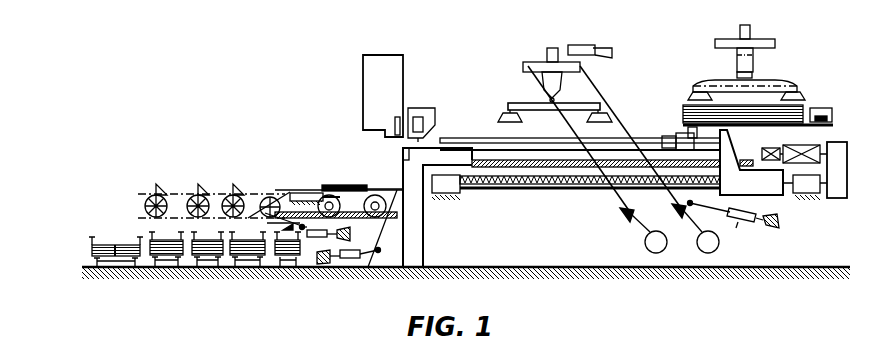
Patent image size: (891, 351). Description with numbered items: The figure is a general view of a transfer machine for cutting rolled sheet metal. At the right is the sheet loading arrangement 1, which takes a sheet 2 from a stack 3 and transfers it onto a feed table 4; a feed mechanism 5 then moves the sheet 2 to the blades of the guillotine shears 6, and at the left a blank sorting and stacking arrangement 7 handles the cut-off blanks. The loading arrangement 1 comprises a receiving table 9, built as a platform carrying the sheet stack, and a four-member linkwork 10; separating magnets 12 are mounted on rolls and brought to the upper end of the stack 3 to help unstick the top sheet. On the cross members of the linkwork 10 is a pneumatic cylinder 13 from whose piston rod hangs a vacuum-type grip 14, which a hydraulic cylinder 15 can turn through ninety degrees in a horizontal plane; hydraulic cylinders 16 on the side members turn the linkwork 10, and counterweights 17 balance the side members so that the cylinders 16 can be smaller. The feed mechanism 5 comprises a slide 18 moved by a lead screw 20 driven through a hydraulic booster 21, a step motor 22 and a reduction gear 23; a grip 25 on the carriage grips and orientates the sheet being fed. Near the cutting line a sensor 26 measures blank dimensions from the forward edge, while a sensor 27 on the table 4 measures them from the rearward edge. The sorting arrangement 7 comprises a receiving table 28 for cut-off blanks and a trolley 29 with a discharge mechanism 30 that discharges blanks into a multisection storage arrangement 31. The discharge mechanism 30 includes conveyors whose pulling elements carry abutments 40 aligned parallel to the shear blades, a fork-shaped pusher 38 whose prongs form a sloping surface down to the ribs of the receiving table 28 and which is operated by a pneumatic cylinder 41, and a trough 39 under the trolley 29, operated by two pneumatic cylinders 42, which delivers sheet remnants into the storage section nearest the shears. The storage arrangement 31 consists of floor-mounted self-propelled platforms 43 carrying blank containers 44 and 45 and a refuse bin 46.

The sheet loading arrangement 1 is at (715, 76).
The sheet 2 is at (525, 143).
The stack 3 is at (785, 117).
The feed table 4 is at (500, 153).
The feed mechanism 5 is at (786, 197).
The guillotine shears 6 is at (370, 73).
The blank sorting and stacking arrangement 7 is at (234, 190).
The receiving table 9 is at (692, 121).
The four-member linkwork 10 is at (600, 90).
The separating magnets 12 is at (818, 109).
The pneumatic cylinder 13 is at (548, 80).
The grip 14 is at (498, 120).
The hydraulic cylinder 15 is at (590, 50).
The hydraulic cylinders 16 is at (737, 222).
The counterweights 17 is at (700, 245).
The slide 18 is at (774, 190).
The lead screw 20 is at (567, 192).
The hydraulic booster 21 is at (808, 147).
The step motor 22 is at (770, 148).
The reduction gear 23 is at (838, 194).
The grip 25 is at (665, 137).
The sensor 26 is at (420, 117).
The sensor 27 is at (470, 187).
The receiving table 28 is at (296, 193).
The trolley 29 is at (330, 185).
The discharge mechanism 30 is at (386, 183).
The multisection storage arrangement 31 is at (107, 237).
The pusher 38 is at (400, 225).
The trough 39 is at (266, 196).
The abutments 40 is at (382, 184).
The pneumatic cylinder 41 is at (343, 268).
The pneumatic cylinders 42 is at (340, 226).
The self-propelled platforms 43 is at (123, 272).
The blank container 44 is at (115, 244).
The blank container 45 is at (160, 240).
The refuse bin 46 is at (288, 268).